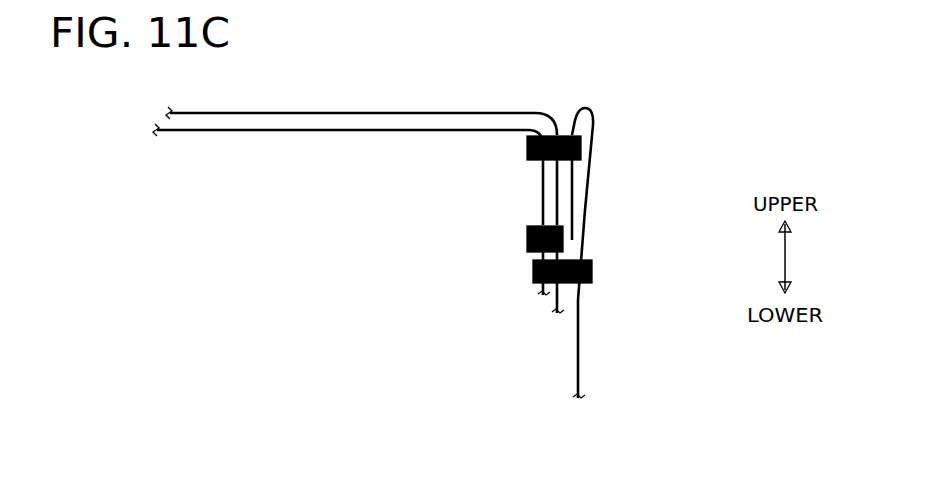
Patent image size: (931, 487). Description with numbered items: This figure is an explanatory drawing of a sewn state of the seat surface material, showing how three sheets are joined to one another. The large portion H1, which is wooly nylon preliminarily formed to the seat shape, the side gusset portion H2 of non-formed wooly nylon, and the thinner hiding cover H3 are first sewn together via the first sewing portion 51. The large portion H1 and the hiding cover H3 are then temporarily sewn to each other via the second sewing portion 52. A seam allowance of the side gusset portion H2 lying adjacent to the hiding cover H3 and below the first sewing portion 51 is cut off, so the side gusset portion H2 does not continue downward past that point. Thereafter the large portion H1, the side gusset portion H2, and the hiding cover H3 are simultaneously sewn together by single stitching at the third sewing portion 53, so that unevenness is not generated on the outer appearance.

The first sewing portion 51 is at (521, 151).
The second sewing portion 52 is at (521, 236).
The third sewing portion 53 is at (598, 268).
The large portion H1 is at (264, 130).
The side gusset portion H2 is at (578, 338).
The hiding cover H3 is at (368, 113).